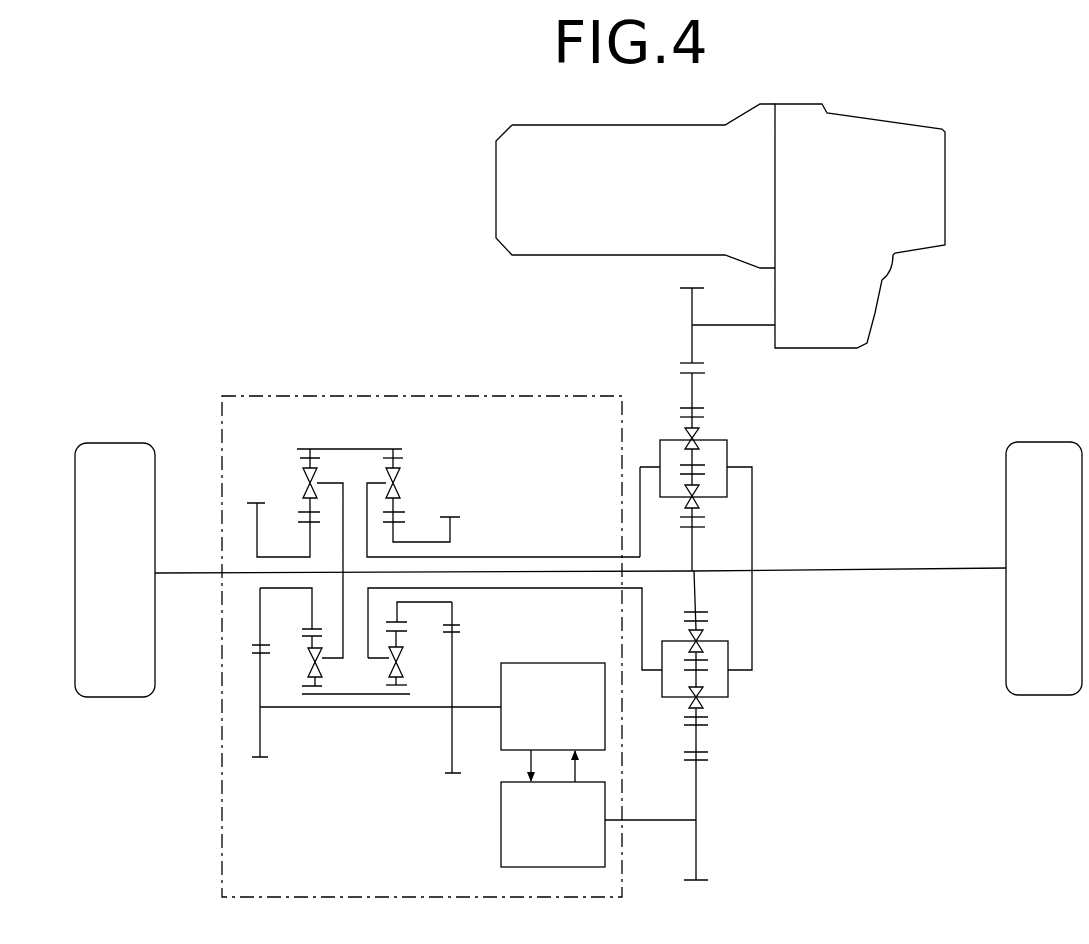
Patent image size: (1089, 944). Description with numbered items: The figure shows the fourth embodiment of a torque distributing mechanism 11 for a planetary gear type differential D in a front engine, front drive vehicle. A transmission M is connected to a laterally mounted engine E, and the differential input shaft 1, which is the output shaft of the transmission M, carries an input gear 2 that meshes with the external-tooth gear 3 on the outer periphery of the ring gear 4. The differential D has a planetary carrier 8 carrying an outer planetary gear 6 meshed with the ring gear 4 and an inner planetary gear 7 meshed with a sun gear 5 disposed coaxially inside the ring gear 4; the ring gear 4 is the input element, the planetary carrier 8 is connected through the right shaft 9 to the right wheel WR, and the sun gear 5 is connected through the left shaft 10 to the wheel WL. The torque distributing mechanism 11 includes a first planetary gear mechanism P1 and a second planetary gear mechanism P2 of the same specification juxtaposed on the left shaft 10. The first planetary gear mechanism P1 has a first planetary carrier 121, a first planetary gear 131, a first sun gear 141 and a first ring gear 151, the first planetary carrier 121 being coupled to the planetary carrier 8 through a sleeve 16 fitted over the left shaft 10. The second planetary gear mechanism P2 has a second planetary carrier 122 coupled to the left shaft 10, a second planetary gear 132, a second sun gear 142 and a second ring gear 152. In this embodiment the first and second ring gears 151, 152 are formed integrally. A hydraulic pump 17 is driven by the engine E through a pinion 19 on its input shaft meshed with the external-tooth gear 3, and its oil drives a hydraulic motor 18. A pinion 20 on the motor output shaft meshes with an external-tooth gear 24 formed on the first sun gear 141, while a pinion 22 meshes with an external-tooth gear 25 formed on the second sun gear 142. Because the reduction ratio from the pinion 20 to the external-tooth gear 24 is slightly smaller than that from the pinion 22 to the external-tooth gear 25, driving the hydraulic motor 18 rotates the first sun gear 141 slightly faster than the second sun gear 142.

The differential input shaft 1 is at (720, 324).
The input gear 2 is at (700, 363).
The external-tooth gear 3 is at (683, 373).
The ring gear 4 is at (705, 408).
The sun gear 5 is at (700, 529).
The outer planetary gear 6 is at (684, 416).
The inner planetary gear 7 is at (706, 518).
The planetary carrier 8 is at (752, 487).
The right shaft 9 is at (866, 568).
The left shaft 10 is at (184, 572).
The torque distributing mechanism 11 is at (452, 396).
The first planetary carrier 121 is at (380, 695).
The second planetary carrier 122 is at (338, 695).
The first planetary gear 131 is at (403, 462).
The second planetary gear 132 is at (298, 462).
The first sun gear 141 is at (400, 628).
The second sun gear 142 is at (308, 632).
The first ring gear 151 is at (393, 446).
The second ring gear 152 is at (308, 446).
The sleeve 16 is at (545, 556).
The hydraulic pump 17 is at (561, 840).
The hydraulic motor 18 is at (561, 722).
The pinion 19 is at (708, 760).
The pinion 20 is at (448, 775).
The pinion 22 is at (265, 758).
The external-tooth gear 24 is at (462, 628).
The external-tooth gear 25 is at (252, 650).
The engine E is at (579, 233).
The transmission M is at (910, 223).
The differential D is at (788, 522).
The left wheel WL is at (115, 470).
The right wheel WR is at (1047, 455).
The first planetary gear mechanism P1 is at (428, 458).
The second planetary gear mechanism P2 is at (280, 456).